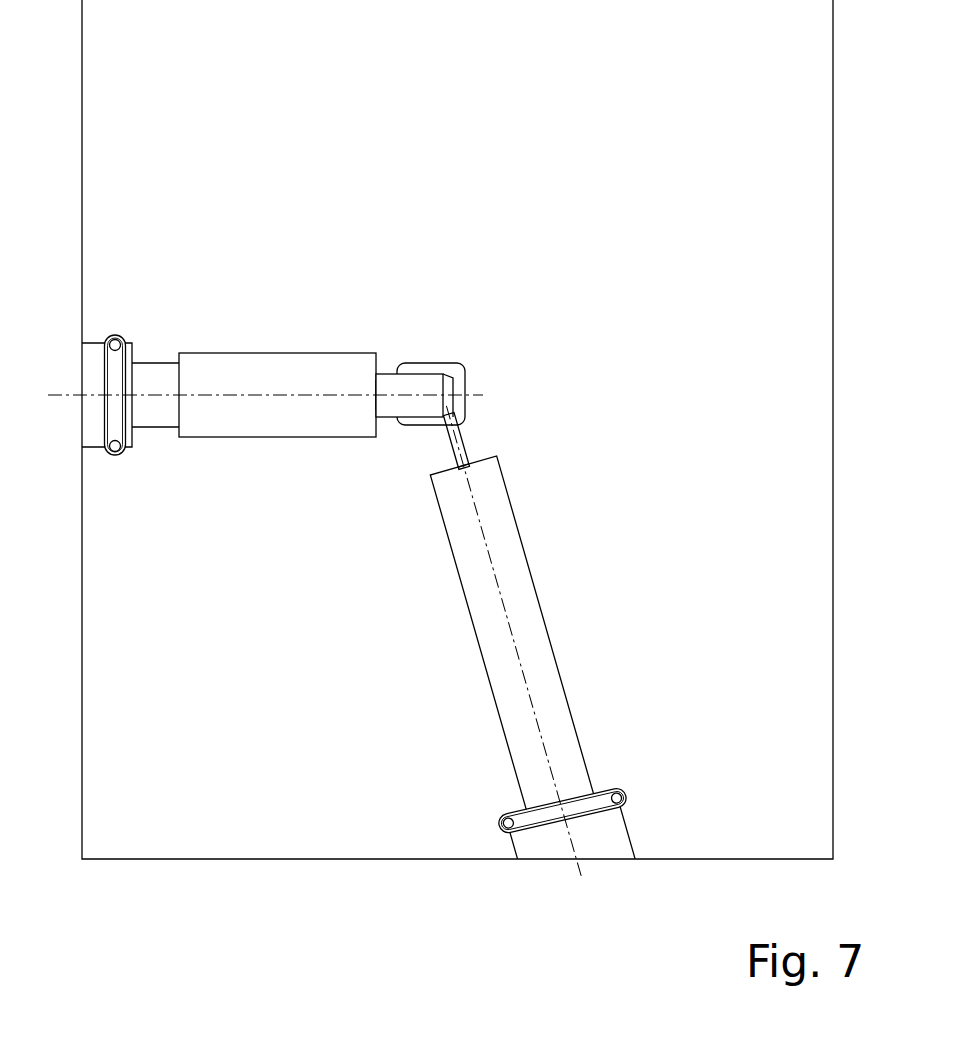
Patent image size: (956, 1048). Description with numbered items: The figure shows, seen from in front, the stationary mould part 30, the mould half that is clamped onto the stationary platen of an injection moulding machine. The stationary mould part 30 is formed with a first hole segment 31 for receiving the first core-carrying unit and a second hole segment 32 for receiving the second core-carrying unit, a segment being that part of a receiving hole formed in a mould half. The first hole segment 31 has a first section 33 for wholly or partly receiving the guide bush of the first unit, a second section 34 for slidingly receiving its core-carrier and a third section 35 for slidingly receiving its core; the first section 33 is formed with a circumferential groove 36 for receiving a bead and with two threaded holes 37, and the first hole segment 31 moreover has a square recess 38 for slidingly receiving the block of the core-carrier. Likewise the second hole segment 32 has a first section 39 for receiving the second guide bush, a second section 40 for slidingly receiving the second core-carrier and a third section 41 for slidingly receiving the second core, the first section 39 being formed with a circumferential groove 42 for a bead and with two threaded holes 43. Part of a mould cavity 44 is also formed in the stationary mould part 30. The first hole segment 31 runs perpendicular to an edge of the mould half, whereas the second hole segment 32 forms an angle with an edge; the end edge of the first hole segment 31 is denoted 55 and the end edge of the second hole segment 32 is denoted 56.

The stationary mould part 30 is at (82, 803).
The first hole segment 31 is at (257, 384).
The second hole segment 32 is at (536, 630).
The first section 33 is at (93, 361).
The second section 34 is at (222, 368).
The third section 35 is at (398, 408).
The circumferential groove 36 is at (113, 403).
The threaded holes 37 is at (105, 455).
The square recess 38 is at (263, 425).
The first section 39 is at (620, 838).
The second section 40 is at (520, 580).
The third section 41 is at (462, 440).
The circumferential groove 42 is at (598, 790).
The threaded holes 43 is at (502, 812).
The mould cavity 44 is at (444, 366).
The end edge of the first hole segment 55 is at (367, 408).
The end edge of the second hole segment 56 is at (450, 470).